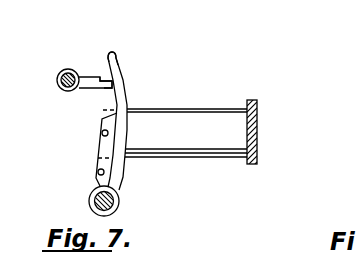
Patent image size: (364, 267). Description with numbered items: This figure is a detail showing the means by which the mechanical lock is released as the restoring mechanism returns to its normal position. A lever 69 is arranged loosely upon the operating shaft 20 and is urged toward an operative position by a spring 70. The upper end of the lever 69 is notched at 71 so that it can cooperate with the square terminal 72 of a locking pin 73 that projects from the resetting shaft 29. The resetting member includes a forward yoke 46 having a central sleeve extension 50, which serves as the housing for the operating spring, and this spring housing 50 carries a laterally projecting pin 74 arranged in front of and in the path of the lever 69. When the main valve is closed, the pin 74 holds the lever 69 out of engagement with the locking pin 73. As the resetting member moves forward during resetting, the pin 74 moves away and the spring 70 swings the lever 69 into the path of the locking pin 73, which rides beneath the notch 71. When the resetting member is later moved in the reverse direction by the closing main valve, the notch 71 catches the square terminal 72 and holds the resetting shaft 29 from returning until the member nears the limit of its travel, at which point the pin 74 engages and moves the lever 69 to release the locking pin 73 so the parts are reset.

The operating shaft 20 is at (90, 198).
The resetting shaft 29 is at (68, 69).
The forward yoke 46 is at (257, 122).
The sleeve extension 50 is at (217, 108).
The lever 69 is at (125, 107).
The spring 70 is at (98, 172).
The notch 71 is at (118, 80).
The square terminal 72 is at (103, 76).
The locking pin 73 is at (85, 76).
The laterally projecting pin 74 is at (108, 133).